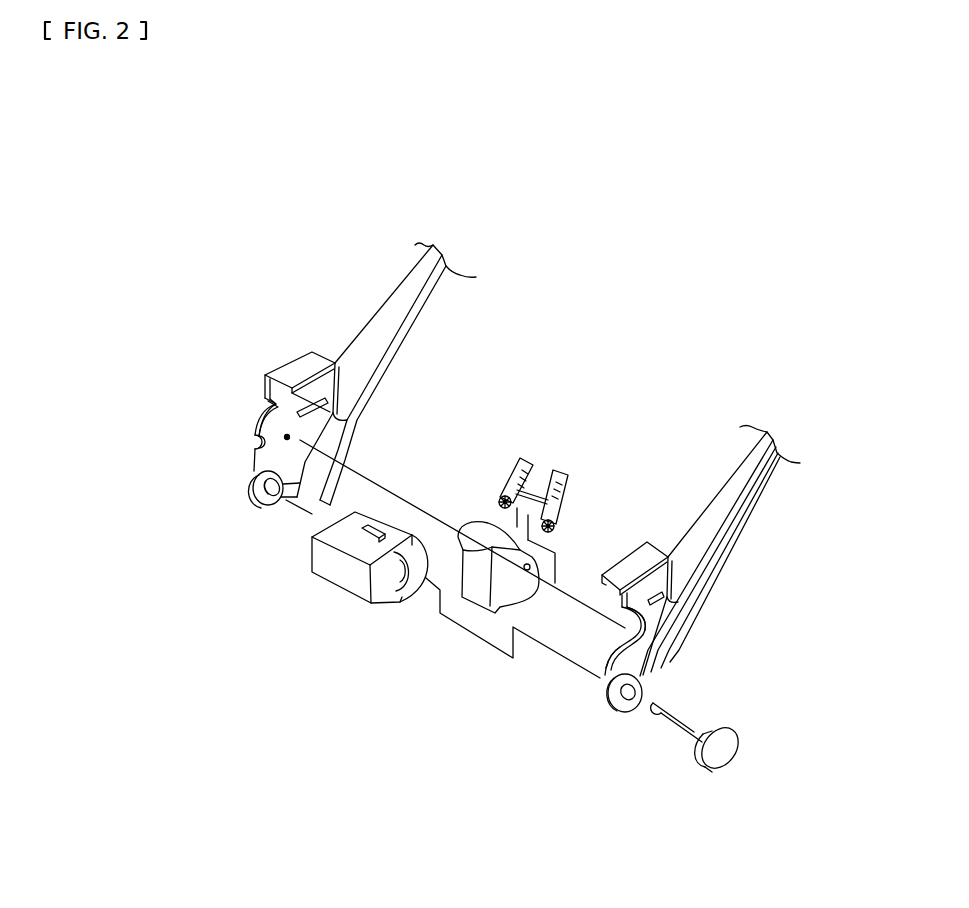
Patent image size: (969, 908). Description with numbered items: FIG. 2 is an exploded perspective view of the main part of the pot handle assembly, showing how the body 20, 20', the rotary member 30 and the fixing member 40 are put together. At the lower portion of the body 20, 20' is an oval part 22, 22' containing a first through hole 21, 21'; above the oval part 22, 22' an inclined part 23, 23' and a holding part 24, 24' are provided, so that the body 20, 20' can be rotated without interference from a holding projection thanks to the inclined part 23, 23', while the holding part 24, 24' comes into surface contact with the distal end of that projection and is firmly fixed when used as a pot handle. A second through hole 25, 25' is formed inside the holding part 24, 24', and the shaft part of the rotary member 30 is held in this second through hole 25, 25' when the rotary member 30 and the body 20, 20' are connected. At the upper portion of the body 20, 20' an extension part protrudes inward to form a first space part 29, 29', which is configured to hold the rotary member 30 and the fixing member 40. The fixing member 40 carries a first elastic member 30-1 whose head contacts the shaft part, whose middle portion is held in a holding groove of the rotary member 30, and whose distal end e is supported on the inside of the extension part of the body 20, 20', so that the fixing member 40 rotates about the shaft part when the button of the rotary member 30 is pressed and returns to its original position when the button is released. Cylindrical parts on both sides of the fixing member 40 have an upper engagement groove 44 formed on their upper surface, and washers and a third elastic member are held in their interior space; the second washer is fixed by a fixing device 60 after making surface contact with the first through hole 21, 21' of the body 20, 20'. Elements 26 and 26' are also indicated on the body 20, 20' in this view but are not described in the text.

The body 20 is at (262, 505).
The first through hole 21 is at (201, 502).
The oval part 22 is at (198, 479).
The inclined part 23 is at (189, 440).
The holding part 24 is at (199, 410).
The second through hole 25 is at (329, 374).
The upright tab 26 is at (306, 339).
The first space part 29 is at (282, 339).
The rotary member 30 is at (457, 637).
The first elastic member 30-1 is at (493, 485).
The distal end of the first elastic member e is at (530, 452).
The fixing member 40 is at (338, 595).
The upper engagement groove 44 is at (371, 516).
The body 20' is at (640, 702).
The first through hole 21' is at (622, 719).
The oval part 22' is at (588, 726).
The inclined part 23' is at (572, 686).
The holding part 24' is at (580, 647).
The second through hole 25' is at (682, 569).
The upright tab 26' is at (640, 543).
The first space part 29' is at (715, 588).
The fixing device 60 is at (725, 755).